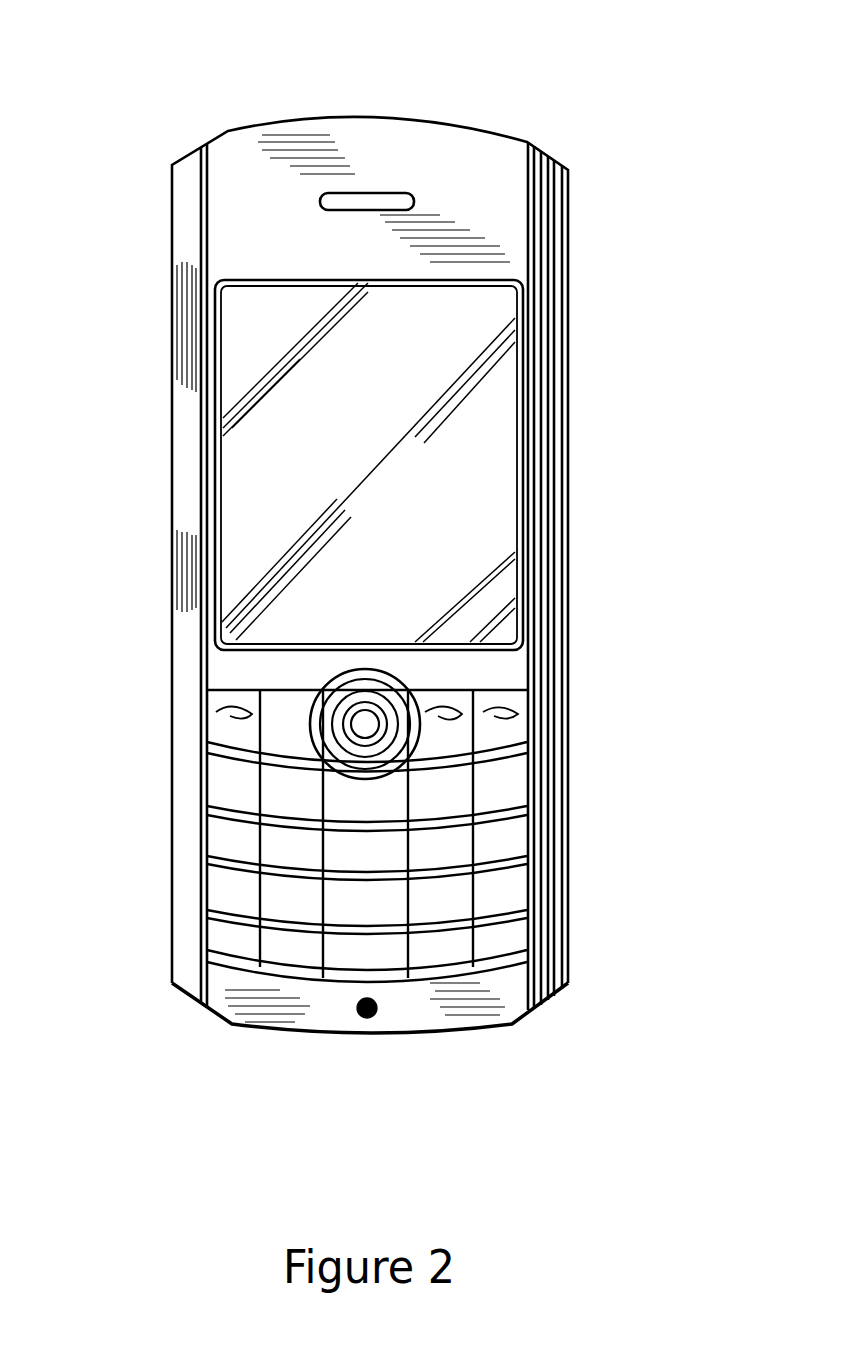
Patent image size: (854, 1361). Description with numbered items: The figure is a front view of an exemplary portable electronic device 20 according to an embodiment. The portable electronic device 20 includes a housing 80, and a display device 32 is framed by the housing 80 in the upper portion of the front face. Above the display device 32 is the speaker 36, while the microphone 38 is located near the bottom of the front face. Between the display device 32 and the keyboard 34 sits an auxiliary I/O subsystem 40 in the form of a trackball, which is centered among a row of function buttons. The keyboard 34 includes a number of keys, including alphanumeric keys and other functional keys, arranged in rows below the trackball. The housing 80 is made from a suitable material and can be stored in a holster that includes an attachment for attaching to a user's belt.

The portable electronic device 20 is at (283, 63).
The display device 32 is at (250, 428).
The keyboard 34 is at (442, 881).
The speaker 36 is at (368, 193).
The microphone 38 is at (367, 1020).
The auxiliary I/O subsystem 40 is at (383, 718).
The housing 80 is at (472, 994).